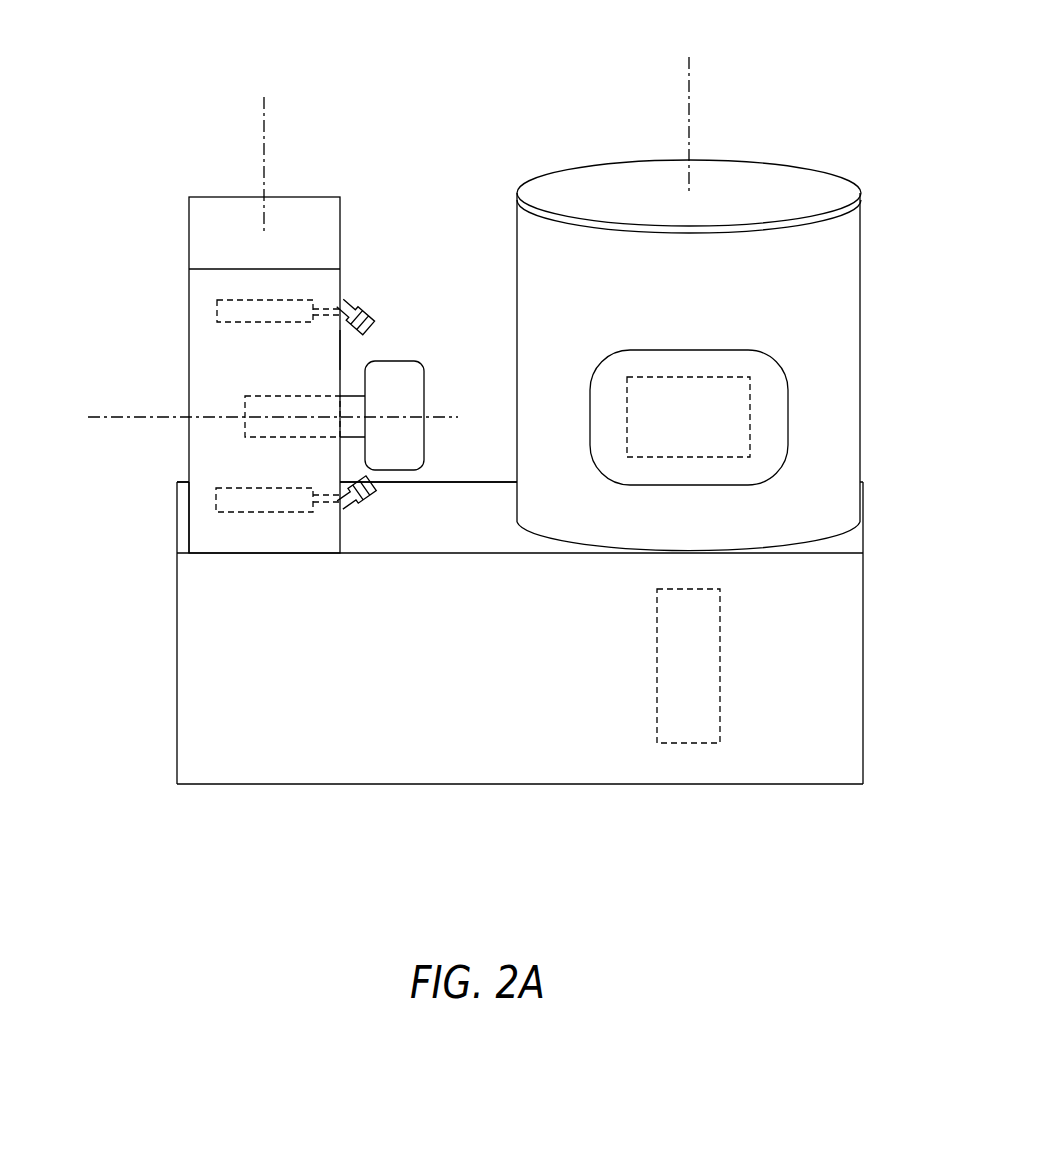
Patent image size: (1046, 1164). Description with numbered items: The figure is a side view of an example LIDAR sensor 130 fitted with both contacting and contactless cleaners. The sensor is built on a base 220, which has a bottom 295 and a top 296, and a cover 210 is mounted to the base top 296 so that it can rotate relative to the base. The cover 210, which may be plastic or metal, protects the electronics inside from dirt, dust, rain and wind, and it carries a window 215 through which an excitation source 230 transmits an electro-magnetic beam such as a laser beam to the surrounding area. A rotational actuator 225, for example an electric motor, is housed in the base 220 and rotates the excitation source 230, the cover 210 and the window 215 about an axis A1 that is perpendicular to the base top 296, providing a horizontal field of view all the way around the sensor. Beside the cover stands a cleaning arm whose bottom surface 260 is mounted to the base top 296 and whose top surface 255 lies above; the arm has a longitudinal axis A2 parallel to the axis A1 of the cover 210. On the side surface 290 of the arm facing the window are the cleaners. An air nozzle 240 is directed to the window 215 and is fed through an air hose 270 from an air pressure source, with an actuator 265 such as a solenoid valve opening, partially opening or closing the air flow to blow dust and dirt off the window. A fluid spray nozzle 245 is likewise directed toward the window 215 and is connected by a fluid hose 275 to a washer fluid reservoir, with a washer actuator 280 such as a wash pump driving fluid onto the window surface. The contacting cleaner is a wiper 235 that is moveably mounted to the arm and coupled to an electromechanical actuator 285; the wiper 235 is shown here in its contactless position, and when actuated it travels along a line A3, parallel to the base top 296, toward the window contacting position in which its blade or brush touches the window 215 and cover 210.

The LIDAR sensor 130 is at (787, 135).
The cover 210 is at (530, 240).
The window 215 is at (657, 365).
The base 220 is at (520, 745).
The rotational actuator 225 is at (697, 745).
The excitation source 230 is at (730, 372).
The wiper 235 is at (425, 390).
The air nozzle 240 is at (362, 305).
The fluid spray nozzle 245 is at (362, 500).
The top surface 255 is at (242, 243).
The bottom surface 260 is at (190, 548).
The actuator 265 is at (216, 303).
The air hose 270 is at (322, 300).
The fluid hose 275 is at (313, 512).
The washer actuator 280 is at (216, 512).
The electromechanical actuator 285 is at (245, 401).
The side surface 290 is at (342, 353).
The bottom 295 is at (270, 785).
The top 296 is at (488, 534).
The axis A1 is at (687, 108).
The longitudinal axis A2 is at (264, 147).
The line A3 is at (255, 417).